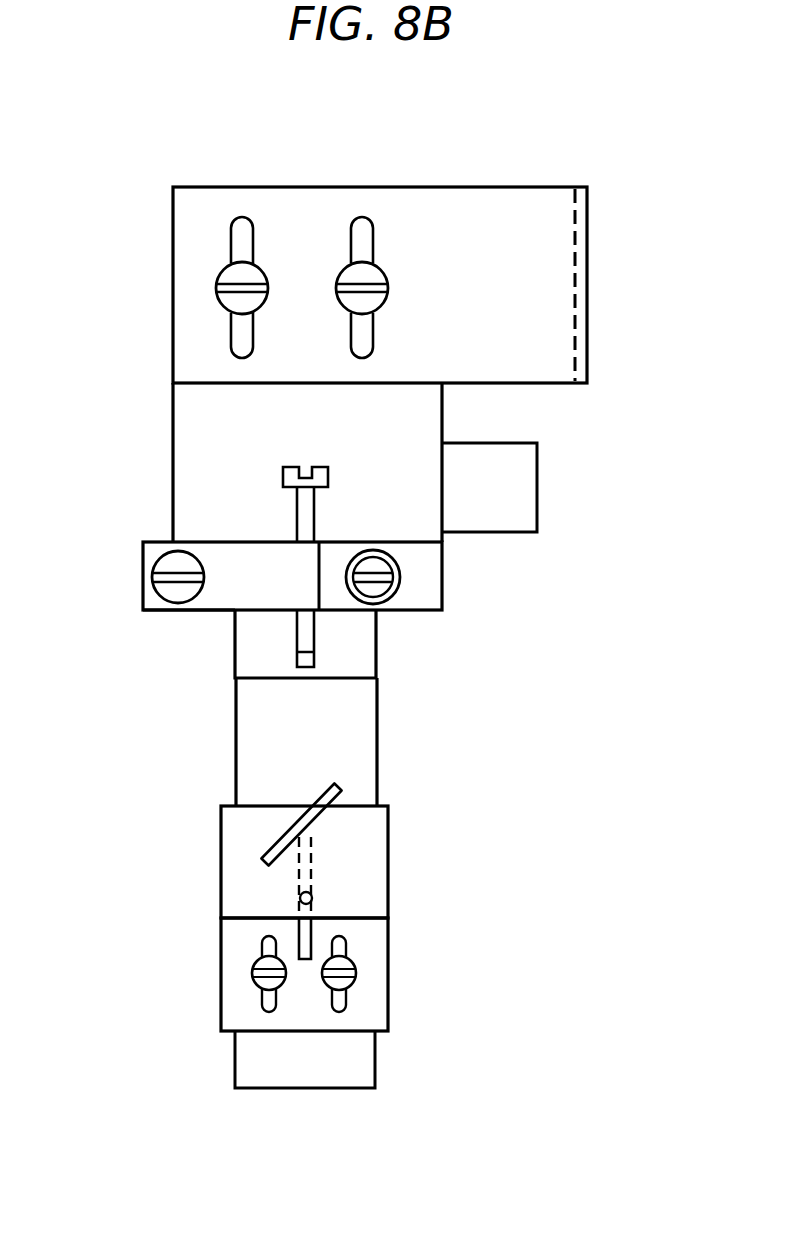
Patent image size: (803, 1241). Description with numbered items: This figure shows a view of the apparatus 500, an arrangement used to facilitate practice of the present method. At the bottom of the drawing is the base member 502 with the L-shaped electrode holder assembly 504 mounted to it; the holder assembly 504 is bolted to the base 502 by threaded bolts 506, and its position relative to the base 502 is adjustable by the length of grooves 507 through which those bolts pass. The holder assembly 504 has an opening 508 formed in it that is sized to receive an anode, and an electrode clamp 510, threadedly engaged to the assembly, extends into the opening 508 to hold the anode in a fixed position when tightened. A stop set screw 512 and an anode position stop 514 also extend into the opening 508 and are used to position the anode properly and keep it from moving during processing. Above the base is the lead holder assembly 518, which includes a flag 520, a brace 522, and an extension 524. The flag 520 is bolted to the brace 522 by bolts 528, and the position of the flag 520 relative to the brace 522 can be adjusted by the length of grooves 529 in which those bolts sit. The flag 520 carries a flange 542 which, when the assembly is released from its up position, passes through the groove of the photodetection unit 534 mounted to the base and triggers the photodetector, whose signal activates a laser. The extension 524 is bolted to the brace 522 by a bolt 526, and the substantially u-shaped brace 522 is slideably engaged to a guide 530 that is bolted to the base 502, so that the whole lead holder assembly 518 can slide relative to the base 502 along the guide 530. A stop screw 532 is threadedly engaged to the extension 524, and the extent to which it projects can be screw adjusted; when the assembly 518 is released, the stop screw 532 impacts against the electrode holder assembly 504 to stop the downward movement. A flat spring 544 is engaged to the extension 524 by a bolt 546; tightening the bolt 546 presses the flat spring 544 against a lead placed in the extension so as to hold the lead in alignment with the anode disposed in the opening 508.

The apparatus 500 is at (599, 59).
The flag 520 is at (502, 186).
The flange 542 is at (582, 275).
The grooves 529 is at (348, 222).
The bolts 528 is at (436, 270).
The brace 522 is at (442, 412).
The stop screw 532 is at (328, 476).
The photodetection unit 534 is at (537, 477).
The extension 524 is at (442, 553).
The lead holder assembly 518 is at (124, 568).
The bolt 546 is at (163, 555).
The bolt 526 is at (395, 583).
The flat spring 544 is at (202, 612).
The guide 530 is at (376, 645).
The base member 502 is at (384, 722).
The opening 508 is at (312, 862).
The electrode clamp 510 is at (338, 787).
The stop set screw 512 is at (313, 898).
The anode position stop 514 is at (299, 926).
The electrode holder assembly 504 is at (397, 934).
The threaded bolts 506 is at (438, 978).
The grooves 507 is at (438, 1030).